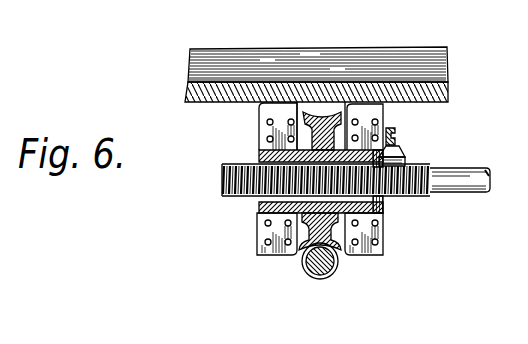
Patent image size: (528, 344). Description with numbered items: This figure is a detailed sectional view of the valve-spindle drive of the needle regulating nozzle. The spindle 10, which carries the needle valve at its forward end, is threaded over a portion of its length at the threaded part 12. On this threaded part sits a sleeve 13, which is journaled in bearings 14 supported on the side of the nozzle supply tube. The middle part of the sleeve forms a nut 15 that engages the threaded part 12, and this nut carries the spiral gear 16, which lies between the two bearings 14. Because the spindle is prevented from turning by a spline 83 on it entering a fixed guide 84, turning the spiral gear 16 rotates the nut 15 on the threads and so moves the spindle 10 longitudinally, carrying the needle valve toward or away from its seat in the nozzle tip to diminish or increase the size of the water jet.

The spindle 10 is at (356, 168).
The threaded part of the spindle 12 is at (227, 166).
The sleeve 13 is at (397, 141).
The bearings 14 is at (384, 223).
The nut 15 is at (262, 219).
The spiral gear 16 is at (300, 250).
The spline 83 is at (412, 168).
The fixed guide 84 is at (406, 148).